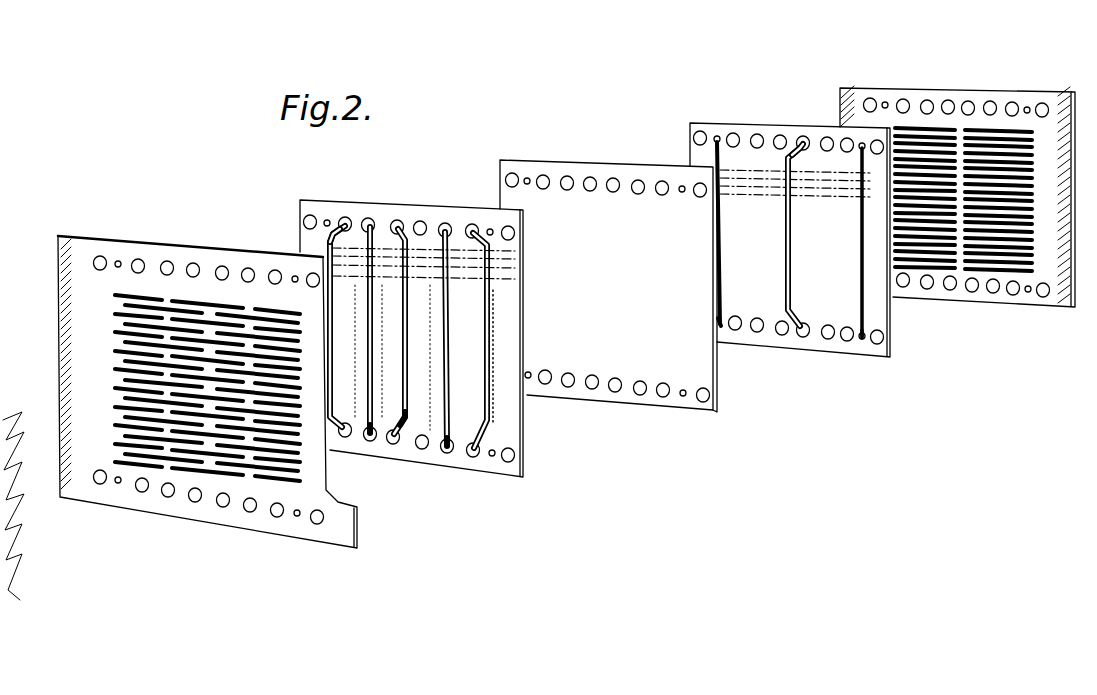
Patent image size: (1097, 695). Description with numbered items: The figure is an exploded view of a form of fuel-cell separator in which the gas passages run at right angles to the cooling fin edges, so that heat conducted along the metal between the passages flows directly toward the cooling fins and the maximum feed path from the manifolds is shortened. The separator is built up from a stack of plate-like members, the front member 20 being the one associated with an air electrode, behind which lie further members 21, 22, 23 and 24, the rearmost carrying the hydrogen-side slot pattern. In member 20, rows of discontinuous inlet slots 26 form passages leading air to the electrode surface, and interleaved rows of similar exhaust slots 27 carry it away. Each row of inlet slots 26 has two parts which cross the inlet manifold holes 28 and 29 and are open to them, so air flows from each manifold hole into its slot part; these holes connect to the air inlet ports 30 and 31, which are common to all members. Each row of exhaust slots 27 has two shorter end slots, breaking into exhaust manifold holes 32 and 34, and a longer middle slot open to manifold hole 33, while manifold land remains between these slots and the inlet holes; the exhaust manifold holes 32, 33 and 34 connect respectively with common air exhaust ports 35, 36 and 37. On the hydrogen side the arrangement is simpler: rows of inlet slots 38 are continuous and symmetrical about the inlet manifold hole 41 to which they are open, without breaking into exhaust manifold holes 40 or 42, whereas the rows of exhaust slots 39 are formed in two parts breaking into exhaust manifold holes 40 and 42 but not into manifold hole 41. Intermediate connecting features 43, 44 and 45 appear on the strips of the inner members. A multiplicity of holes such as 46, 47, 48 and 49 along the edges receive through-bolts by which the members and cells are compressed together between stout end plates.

The member 20 is at (172, 243).
The second insulating plate 21 is at (328, 200).
The third insulating plate 22 is at (607, 165).
The fourth insulating plate 23 is at (713, 123).
The fifth insulating plate 24 is at (935, 62).
The inlet slots 26 is at (130, 312).
The exhaust slots 27 is at (128, 298).
The inlet manifold hole 28 is at (372, 380).
The inlet manifold hole 29 is at (450, 415).
The air inlet port 30 is at (378, 440).
The air inlet port 31 is at (450, 449).
The exhaust manifold hole 32 is at (327, 238).
The exhaust manifold hole 33 is at (415, 415).
The exhaust manifold hole 34 is at (493, 347).
The air exhaust port 35 is at (348, 222).
The air exhaust port 36 is at (398, 225).
The air exhaust port 37 is at (472, 226).
The inlet slots 38 is at (1002, 133).
The exhaust slots 39 is at (1033, 153).
The exhaust manifold hole 40 is at (720, 214).
The inlet manifold hole 41 is at (784, 248).
The exhaust manifold hole 42 is at (860, 285).
The terminal end 43 is at (802, 140).
The terminal end 44 is at (720, 326).
The terminal end 45 is at (862, 338).
The hole 46 is at (705, 402).
The hole 47 is at (698, 183).
The hole 48 is at (514, 172).
The hole 49 is at (100, 485).